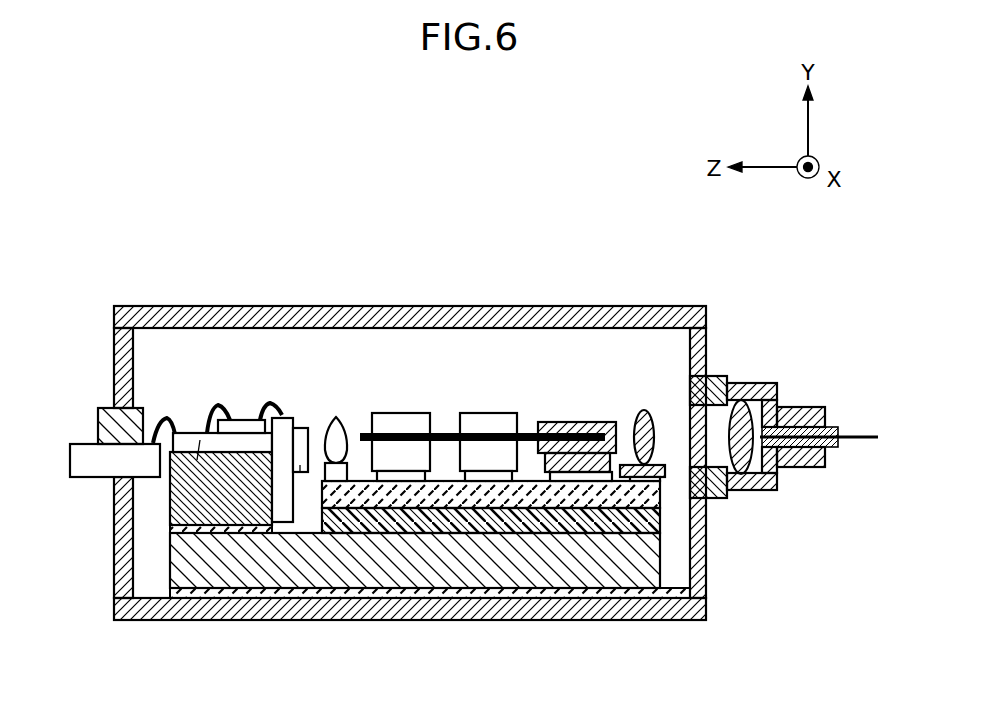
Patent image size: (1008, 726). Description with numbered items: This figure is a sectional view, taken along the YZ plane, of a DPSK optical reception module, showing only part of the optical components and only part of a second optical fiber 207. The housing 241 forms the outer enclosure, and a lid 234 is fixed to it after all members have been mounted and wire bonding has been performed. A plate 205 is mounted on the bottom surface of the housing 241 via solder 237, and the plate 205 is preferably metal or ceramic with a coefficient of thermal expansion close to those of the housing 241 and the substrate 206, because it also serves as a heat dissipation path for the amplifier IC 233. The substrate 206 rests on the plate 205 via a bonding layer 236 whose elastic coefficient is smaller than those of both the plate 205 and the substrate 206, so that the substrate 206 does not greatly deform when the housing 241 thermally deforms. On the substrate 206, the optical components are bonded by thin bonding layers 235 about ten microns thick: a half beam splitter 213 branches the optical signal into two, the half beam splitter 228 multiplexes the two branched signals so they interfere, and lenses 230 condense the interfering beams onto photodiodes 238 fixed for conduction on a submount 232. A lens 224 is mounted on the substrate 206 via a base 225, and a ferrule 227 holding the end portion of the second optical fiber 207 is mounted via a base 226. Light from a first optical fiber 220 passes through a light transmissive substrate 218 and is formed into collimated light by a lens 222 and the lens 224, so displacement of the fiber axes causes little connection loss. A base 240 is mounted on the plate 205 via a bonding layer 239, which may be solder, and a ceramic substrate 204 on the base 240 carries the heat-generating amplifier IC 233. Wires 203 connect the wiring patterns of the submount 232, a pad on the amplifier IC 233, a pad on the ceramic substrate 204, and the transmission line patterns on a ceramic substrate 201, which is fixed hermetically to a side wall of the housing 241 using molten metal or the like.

The ceramic substrate 201 is at (84, 452).
The wires 203 is at (270, 403).
The ceramic substrate 204 is at (170, 485).
The plate 205 is at (652, 602).
The substrate 206 is at (513, 500).
The second optical fiber 207 is at (529, 437).
The half beam splitter 213 is at (488, 420).
The light transmissive substrate 218 is at (718, 407).
The first optical fiber 220 is at (862, 437).
The lens 222 is at (757, 400).
The lens 224 is at (650, 410).
The base 225 is at (630, 465).
The base 226 is at (588, 425).
The ferrule 227 is at (564, 422).
The half beam splitter 228 is at (402, 420).
The lenses 230 is at (335, 423).
The submount 232 is at (285, 507).
The amplifier IC 233 is at (243, 448).
The lid 234 is at (158, 306).
The bonding layers 235 is at (490, 477).
The bonding layer 236 is at (707, 568).
The solder 237 is at (622, 598).
The photodiodes 238 is at (343, 500).
The bonding layer 239 is at (246, 525).
The base 240 is at (217, 553).
The housing 241 is at (145, 600).